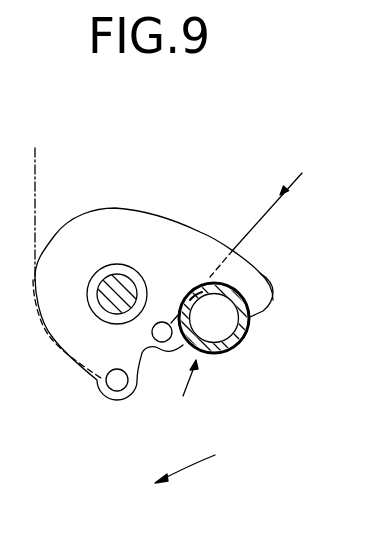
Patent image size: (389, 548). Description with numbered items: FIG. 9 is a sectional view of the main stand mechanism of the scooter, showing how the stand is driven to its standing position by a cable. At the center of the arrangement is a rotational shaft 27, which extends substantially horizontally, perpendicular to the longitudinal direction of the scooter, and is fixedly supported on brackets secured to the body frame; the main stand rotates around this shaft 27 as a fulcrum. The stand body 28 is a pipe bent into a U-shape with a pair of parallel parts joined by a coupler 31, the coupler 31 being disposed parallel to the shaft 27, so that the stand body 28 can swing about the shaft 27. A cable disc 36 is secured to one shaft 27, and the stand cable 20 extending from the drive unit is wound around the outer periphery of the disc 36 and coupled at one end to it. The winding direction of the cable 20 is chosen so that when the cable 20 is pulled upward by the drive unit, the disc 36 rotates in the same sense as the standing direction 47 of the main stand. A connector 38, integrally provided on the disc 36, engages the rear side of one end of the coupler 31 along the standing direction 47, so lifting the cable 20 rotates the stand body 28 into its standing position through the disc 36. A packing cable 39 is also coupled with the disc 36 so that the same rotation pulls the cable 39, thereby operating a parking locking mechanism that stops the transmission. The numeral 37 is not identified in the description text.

The stand cable 20 is at (36, 171).
The rotational shaft 27 is at (117, 285).
The stand body 28 is at (182, 394).
The coupler 31 is at (227, 348).
The cable disc 36 is at (115, 213).
The cam edge 37 is at (262, 275).
The connector 38 is at (188, 301).
The packing cable 39 is at (255, 223).
The standing direction 47 is at (192, 472).